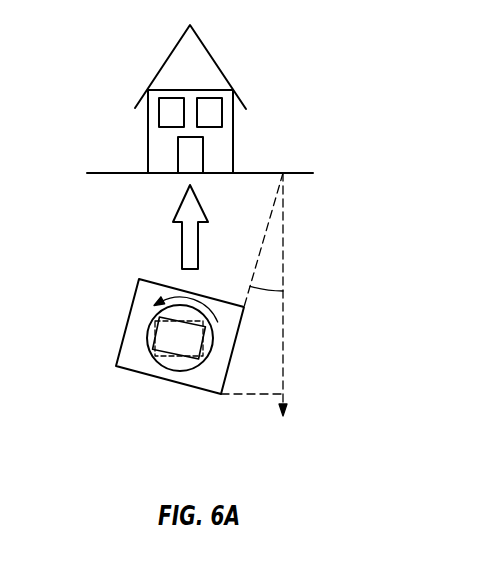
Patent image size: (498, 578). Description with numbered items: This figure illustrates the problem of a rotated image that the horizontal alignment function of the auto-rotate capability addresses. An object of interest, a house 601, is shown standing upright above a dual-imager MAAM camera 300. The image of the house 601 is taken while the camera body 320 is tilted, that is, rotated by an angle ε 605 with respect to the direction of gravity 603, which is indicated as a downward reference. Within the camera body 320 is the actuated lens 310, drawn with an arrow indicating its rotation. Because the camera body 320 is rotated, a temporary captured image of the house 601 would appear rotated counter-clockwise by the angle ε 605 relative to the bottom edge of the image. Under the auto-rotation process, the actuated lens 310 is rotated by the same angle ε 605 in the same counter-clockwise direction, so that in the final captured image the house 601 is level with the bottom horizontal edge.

The house 601 is at (218, 66).
The direction of gravity 603 is at (264, 311).
The angle ε 605 is at (278, 273).
The dual-imager MAAM camera 300 is at (120, 387).
The camera body 320 is at (135, 298).
The actuated lens 310 is at (150, 352).